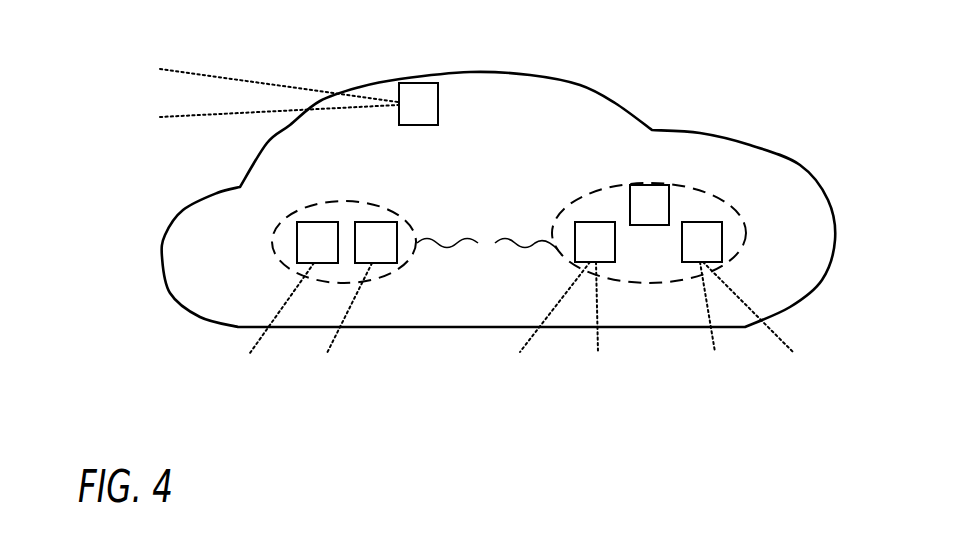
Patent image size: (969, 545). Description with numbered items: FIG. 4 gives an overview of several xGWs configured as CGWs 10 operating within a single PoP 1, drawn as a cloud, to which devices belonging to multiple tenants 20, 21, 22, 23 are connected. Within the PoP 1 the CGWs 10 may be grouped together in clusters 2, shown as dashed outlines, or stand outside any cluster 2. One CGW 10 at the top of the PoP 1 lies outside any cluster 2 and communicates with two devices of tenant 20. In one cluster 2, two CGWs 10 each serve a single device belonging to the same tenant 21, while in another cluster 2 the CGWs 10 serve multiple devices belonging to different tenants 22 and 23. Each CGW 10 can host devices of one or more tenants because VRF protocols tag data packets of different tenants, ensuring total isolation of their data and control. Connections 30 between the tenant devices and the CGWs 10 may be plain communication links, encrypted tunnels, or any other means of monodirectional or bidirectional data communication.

The PoP 1 is at (602, 95).
The cluster 2 is at (487, 242).
The CGW 10 is at (407, 115).
The tenant 20 is at (108, 70).
The tenant 21 is at (249, 388).
The tenant 22 is at (518, 388).
The tenant 23 is at (596, 388).
The connection 30 is at (211, 70).